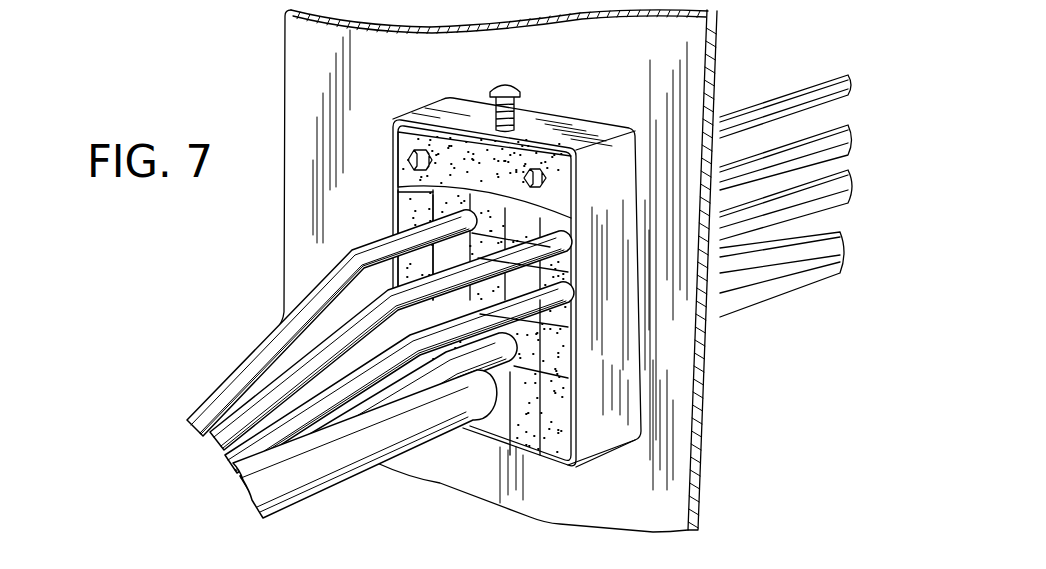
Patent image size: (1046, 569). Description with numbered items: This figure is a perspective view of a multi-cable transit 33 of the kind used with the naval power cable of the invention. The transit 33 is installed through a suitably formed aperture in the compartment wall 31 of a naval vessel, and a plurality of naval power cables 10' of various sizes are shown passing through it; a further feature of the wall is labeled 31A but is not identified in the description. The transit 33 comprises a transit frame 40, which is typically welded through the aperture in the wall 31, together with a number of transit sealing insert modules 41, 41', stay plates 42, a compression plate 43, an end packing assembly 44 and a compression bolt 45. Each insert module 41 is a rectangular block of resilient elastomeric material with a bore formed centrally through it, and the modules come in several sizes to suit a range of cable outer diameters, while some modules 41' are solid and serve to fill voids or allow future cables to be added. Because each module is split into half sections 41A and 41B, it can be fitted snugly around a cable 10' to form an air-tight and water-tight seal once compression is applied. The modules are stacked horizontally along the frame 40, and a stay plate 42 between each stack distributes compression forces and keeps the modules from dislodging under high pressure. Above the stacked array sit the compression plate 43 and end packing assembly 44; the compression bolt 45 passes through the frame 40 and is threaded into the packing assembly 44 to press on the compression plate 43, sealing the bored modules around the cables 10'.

The naval power cable 10' is at (347, 364).
The compartment wall 31 is at (690, 37).
The cable rails 31A is at (647, 168).
The multi-cable transit 33 is at (607, 455).
The transit frame 40 is at (630, 160).
The transit sealing insert module 41 is at (708, 286).
The solid insert module 41' is at (554, 317).
The insert module half section 41A is at (471, 200).
The insert module half section 41B is at (404, 224).
The stay plate 42 is at (572, 247).
The compression plate 43 is at (433, 190).
The end packing assembly 44 is at (507, 158).
The compression bolt 45 is at (507, 80).